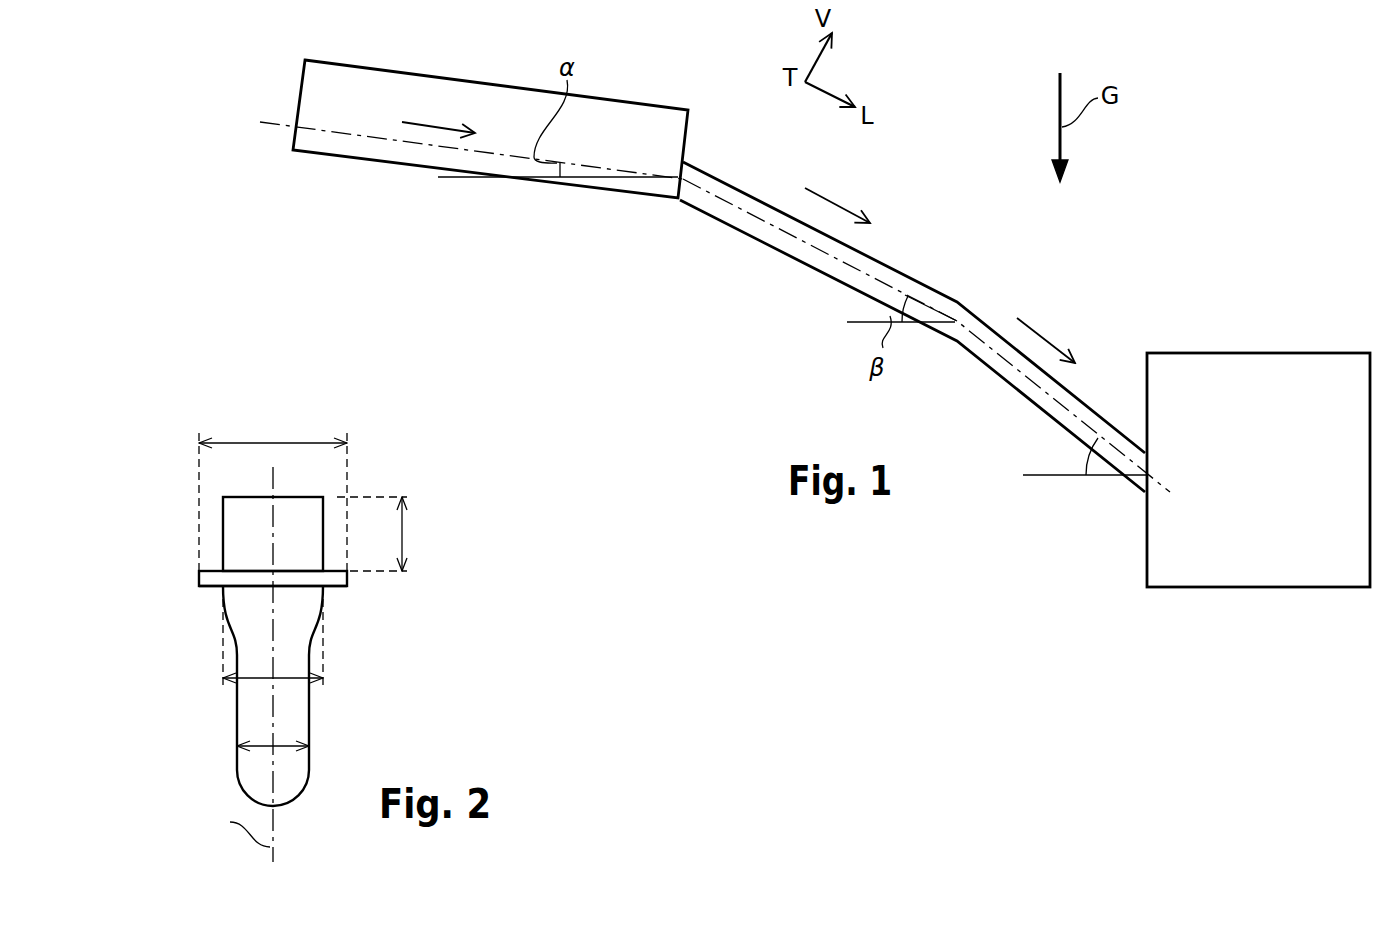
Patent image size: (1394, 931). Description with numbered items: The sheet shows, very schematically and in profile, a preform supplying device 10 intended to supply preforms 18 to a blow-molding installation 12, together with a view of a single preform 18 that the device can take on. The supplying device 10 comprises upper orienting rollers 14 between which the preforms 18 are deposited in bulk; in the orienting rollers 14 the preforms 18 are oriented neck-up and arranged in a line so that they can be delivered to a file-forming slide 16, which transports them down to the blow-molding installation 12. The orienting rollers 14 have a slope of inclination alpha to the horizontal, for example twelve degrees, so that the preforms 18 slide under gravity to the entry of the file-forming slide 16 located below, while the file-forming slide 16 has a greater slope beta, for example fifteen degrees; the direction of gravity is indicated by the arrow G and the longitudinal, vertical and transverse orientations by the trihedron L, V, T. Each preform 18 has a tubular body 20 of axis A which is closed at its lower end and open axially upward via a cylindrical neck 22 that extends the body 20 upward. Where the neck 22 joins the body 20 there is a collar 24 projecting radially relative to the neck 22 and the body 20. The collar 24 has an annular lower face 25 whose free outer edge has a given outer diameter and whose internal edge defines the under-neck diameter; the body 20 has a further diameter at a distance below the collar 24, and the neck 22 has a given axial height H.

In FIG. 1, the preform supplying device 10 is at (957, 107).
In FIG. 1, the blow-molding installation 12 is at (1227, 370).
In FIG. 1, the orienting rollers 14 is at (353, 93).
In FIG. 1, the file-forming slide 16 is at (903, 283).
In FIG. 2, the preform 18 is at (299, 638).
In FIG. 2, the tubular body 20 is at (245, 703).
In FIG. 2, the neck 22 is at (248, 527).
In FIG. 2, the collar 24 is at (205, 577).
In FIG. 2, the annular lower face 25 is at (337, 590).